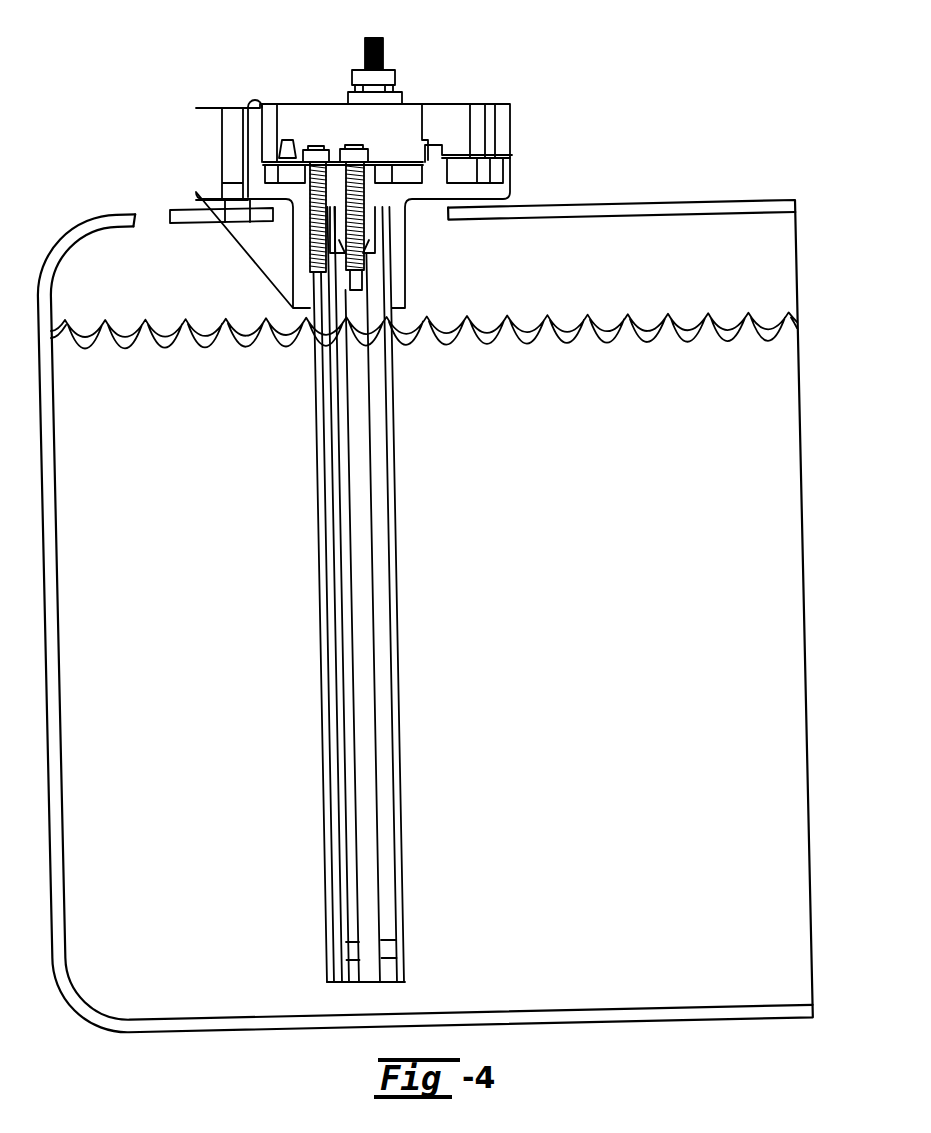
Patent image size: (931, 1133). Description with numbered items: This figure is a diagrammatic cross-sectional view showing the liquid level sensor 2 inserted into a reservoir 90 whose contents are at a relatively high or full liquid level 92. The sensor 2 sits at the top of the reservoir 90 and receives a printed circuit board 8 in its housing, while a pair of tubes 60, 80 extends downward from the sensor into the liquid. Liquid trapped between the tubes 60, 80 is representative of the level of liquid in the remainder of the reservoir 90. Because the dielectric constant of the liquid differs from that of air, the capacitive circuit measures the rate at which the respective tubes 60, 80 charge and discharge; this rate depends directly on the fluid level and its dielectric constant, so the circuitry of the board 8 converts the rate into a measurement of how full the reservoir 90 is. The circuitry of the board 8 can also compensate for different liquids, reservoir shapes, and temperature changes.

The liquid level sensor 2 is at (496, 61).
The printed circuit board 8 is at (500, 158).
The tube 60 is at (367, 671).
The tube 80 is at (400, 729).
The reservoir 90 is at (672, 154).
The liquid level 92 is at (642, 293).